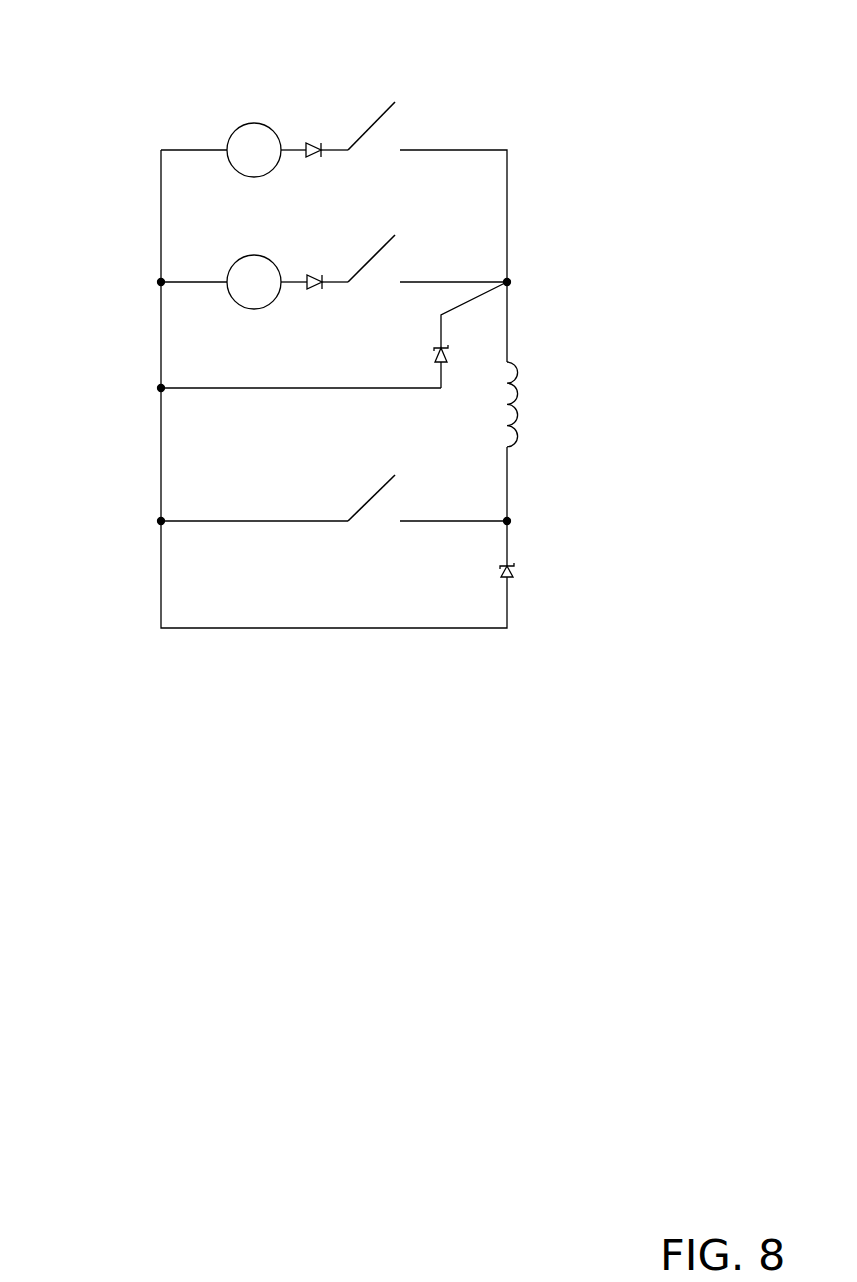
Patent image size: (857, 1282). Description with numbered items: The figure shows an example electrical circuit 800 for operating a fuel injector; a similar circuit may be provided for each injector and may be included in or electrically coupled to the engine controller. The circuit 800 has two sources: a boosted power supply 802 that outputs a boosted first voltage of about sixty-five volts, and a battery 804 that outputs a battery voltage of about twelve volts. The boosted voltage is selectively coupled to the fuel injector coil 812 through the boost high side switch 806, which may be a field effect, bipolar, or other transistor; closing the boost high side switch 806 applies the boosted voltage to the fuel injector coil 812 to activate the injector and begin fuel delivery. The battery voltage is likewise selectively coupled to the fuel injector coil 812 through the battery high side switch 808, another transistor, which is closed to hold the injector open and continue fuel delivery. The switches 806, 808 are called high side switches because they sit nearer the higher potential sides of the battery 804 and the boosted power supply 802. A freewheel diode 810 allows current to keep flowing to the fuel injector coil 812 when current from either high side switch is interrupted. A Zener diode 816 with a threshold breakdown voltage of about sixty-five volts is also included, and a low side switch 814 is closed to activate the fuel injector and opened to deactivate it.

The electrical circuit 800 is at (120, 53).
The boosted power supply 802 is at (250, 123).
The battery 804 is at (253, 255).
The boost high side switch 806 is at (372, 122).
The battery high side switch 808 is at (370, 258).
The freewheel diode 810 is at (437, 352).
The fuel injector coil 812 is at (505, 396).
The low side switch 814 is at (370, 500).
The Zener diode 816 is at (503, 561).